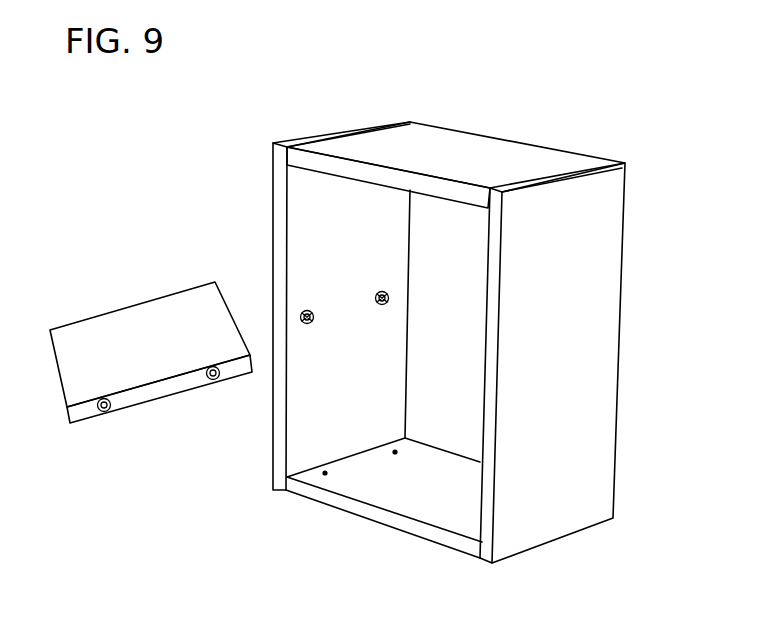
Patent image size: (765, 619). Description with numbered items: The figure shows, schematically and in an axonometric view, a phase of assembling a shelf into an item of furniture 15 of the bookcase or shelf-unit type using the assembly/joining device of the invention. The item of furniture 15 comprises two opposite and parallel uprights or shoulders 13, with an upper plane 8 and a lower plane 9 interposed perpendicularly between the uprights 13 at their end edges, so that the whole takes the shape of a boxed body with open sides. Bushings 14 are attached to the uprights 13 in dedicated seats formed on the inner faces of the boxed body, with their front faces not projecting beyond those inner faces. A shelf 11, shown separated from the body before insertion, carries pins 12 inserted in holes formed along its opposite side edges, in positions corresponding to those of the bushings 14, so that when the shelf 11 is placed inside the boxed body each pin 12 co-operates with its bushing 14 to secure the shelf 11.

The upper plane 8 is at (433, 140).
The lower plane 9 is at (418, 495).
The shelf 11 is at (137, 345).
The pin 12 is at (213, 381).
The upright 13 is at (325, 203).
The bushing 14 is at (300, 315).
The item of furniture 15 is at (552, 130).